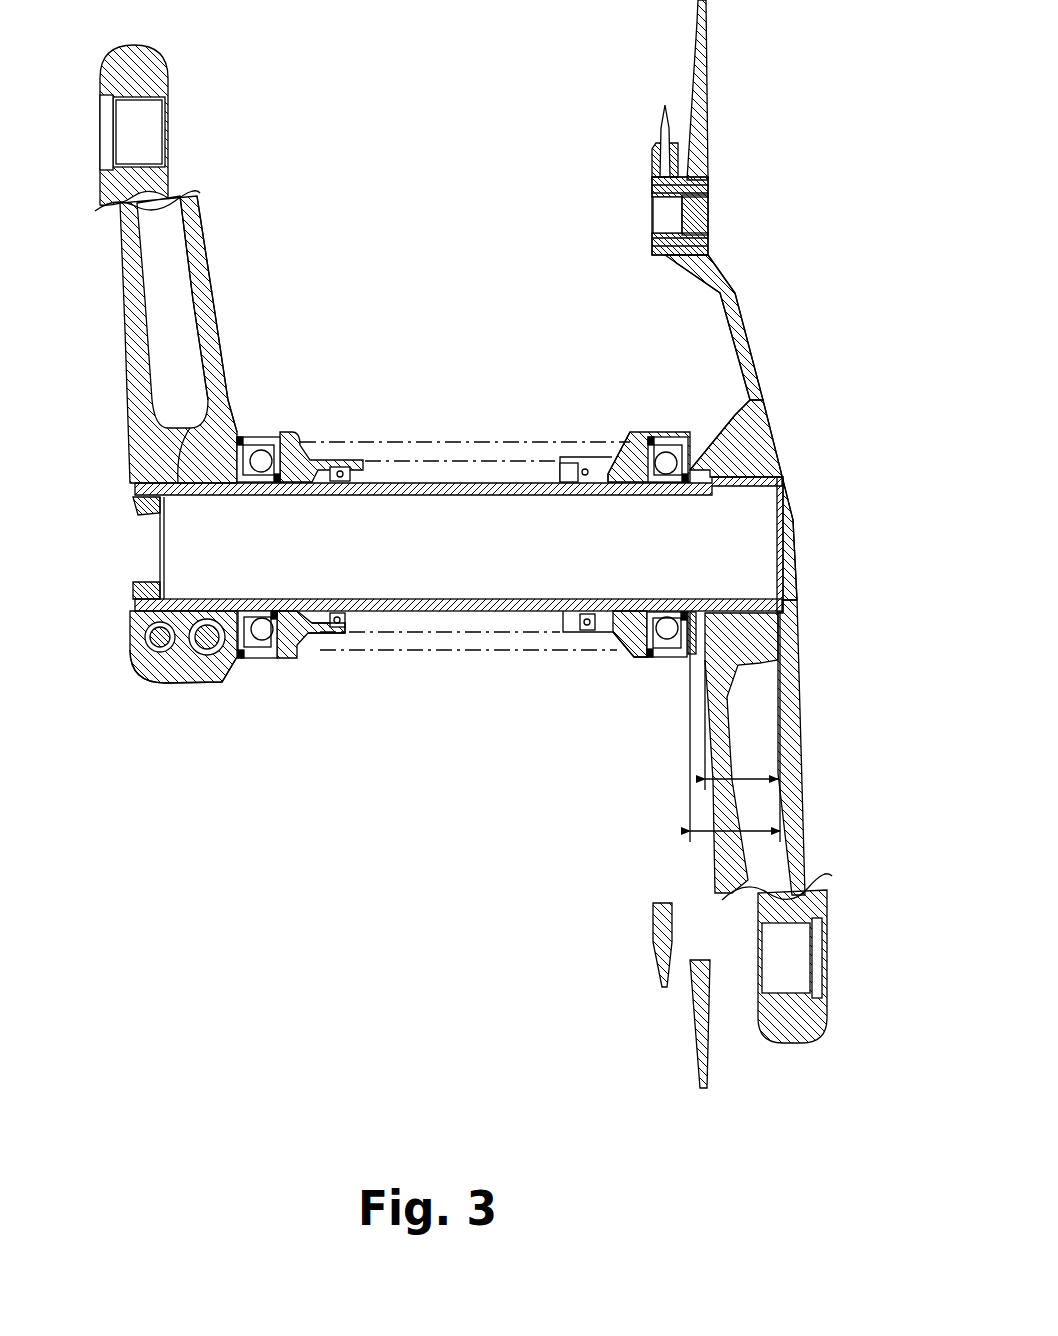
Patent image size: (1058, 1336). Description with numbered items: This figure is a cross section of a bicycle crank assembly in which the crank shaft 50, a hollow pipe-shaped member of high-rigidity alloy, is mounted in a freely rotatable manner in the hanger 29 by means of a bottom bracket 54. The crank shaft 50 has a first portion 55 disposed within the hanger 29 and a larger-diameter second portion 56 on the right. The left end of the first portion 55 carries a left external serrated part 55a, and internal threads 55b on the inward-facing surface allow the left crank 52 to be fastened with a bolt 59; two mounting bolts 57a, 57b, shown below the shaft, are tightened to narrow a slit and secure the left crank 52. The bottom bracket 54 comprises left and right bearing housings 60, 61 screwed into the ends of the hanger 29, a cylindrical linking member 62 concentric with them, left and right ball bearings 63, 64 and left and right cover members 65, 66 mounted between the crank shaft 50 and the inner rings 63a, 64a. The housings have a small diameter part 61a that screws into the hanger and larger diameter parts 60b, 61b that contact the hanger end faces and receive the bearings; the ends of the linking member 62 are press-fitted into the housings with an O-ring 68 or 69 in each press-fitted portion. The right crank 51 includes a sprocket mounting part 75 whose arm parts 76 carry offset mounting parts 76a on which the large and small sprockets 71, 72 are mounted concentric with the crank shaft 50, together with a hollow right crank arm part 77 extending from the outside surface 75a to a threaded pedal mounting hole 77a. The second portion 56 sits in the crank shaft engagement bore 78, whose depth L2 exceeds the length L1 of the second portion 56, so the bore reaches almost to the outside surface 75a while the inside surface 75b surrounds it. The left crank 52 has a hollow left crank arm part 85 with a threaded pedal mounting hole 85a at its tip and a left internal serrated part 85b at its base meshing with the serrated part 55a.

The hanger 29 is at (478, 440).
The crank shaft 50 is at (409, 474).
The right crank 51 is at (764, 354).
The left crank 52 is at (223, 300).
The bottom bracket 54 is at (636, 428).
The first portion 55 is at (347, 464).
The left external serrated part 55a is at (174, 462).
The internal threads 55b is at (148, 517).
The second portion 56 is at (778, 459).
The mounting bolt 57a is at (146, 646).
The mounting bolt 57b is at (226, 682).
The bolt 59 is at (133, 597).
The left bearing housing 60 is at (271, 430).
The larger diameter part 60b is at (300, 640).
The right bearing housing 61 is at (666, 434).
The small diameter part 61a is at (616, 642).
The larger diameter part 61b is at (663, 657).
The cylindrical linking member 62 is at (483, 614).
The left ball bearing 63 is at (267, 662).
The inner ring 63a is at (270, 605).
The right ball bearing 64 is at (655, 660).
The inner ring 64a is at (657, 607).
The left cover member 65 is at (207, 655).
The right cover member 66 is at (690, 655).
The O-ring 68 is at (342, 634).
The O-ring 69 is at (585, 630).
The sprocket 71 is at (701, 122).
The sprocket 72 is at (657, 156).
The sprocket mounting part 75 is at (765, 297).
The outside surface 75a is at (727, 290).
The inside surface 75b is at (726, 414).
The arm part 76 is at (726, 307).
The mounting part 76a is at (666, 150).
The right crank arm part 77 is at (794, 726).
The threaded pedal mounting hole 77a is at (767, 957).
The crank shaft engagement bore 78 is at (742, 604).
The left crank arm part 85 is at (126, 310).
The threaded pedal mounting hole 85a is at (142, 160).
The left internal serrated part 85b is at (178, 652).
The first length L1 is at (765, 778).
The second length L2 is at (760, 832).